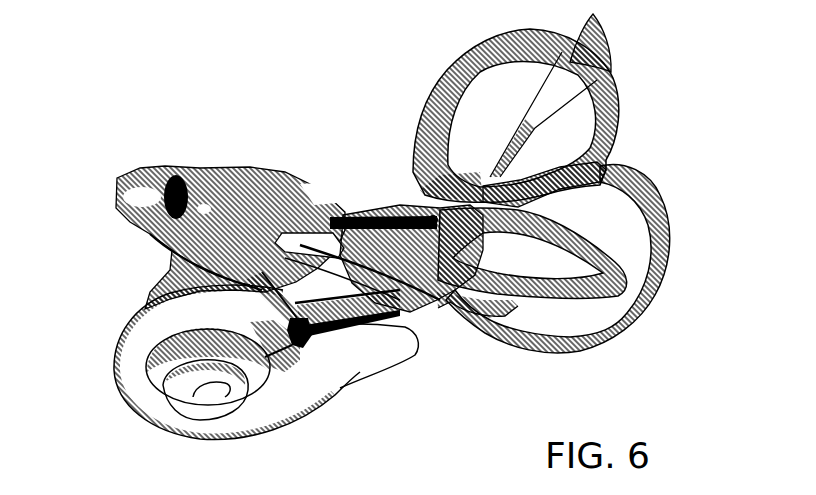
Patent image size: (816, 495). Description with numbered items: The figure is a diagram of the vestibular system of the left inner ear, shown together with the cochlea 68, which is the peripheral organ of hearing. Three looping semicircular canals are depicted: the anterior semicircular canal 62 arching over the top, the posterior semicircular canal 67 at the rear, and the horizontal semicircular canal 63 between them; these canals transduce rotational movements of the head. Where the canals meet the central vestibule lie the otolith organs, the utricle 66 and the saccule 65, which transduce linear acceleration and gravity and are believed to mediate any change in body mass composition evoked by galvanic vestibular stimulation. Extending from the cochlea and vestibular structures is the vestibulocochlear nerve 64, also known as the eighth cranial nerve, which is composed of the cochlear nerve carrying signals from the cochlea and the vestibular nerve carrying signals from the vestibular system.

The anterior semicircular canal 62 is at (440, 73).
The horizontal semicircular canal 63 is at (504, 305).
The vestibulocochlear nerve 64 is at (120, 172).
The saccule 65 is at (375, 262).
The utricle 66 is at (383, 205).
The posterior semicircular canal 67 is at (655, 307).
The cochlea 68 is at (154, 398).